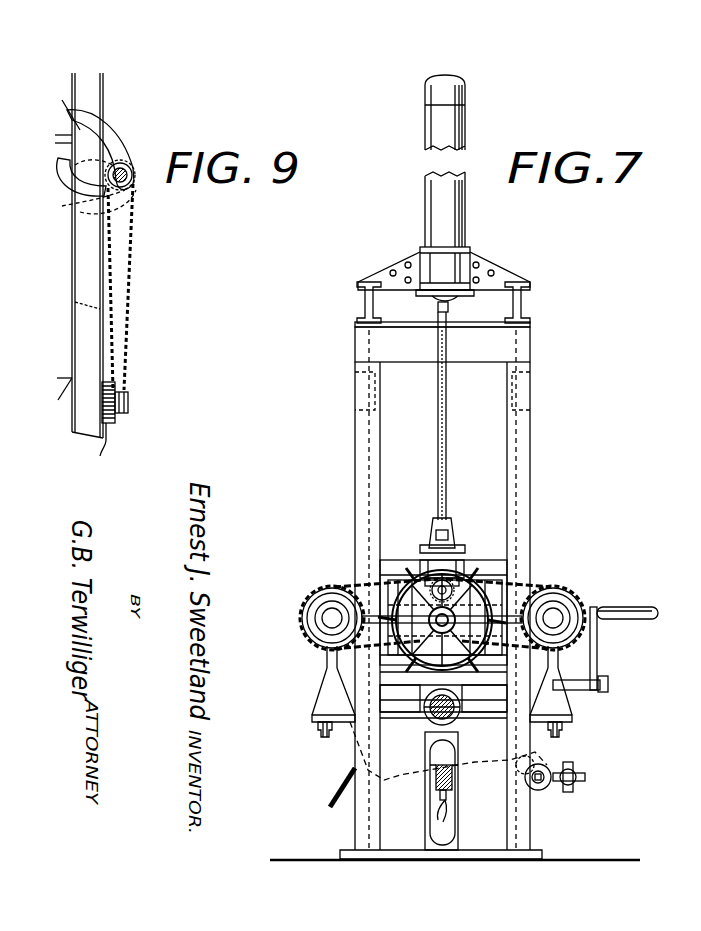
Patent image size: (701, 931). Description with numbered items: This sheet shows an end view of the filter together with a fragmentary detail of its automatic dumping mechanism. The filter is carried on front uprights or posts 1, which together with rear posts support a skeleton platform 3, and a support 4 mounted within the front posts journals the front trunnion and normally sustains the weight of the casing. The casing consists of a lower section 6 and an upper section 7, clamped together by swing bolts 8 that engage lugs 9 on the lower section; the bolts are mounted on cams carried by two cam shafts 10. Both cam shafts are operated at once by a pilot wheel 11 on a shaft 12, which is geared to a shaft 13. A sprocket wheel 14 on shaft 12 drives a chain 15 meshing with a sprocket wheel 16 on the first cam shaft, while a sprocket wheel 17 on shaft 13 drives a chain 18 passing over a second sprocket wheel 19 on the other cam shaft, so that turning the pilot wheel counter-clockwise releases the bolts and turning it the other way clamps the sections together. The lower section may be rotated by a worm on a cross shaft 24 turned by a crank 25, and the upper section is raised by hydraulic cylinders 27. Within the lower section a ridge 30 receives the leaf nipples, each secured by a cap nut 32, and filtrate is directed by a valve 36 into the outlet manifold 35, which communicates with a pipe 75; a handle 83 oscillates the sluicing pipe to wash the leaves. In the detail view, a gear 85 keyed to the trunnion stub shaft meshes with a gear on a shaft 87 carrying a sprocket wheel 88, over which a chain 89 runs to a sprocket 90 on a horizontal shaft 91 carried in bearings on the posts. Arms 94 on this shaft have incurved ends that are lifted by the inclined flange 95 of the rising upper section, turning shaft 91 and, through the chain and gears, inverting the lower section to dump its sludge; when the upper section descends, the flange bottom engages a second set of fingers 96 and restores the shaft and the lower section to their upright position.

In FIG. 7, the front uprights or posts 1 is at (360, 815).
In FIG. 7, the skeleton platform 3 is at (362, 302).
In FIG. 7, the support 4 is at (466, 718).
In FIG. 7, the lower section 6 is at (340, 693).
In FIG. 7, the upper section 7 is at (486, 583).
In FIG. 7, the swing bolts 8 is at (330, 662).
In FIG. 7, the lugs 9 is at (320, 716).
In FIG. 7, the cam shafts 10 is at (332, 618).
In FIG. 7, the pilot wheel 11 is at (388, 578).
In FIG. 7, the shaft 12 is at (410, 648).
In FIG. 7, the shaft 13 is at (452, 584).
In FIG. 7, the sprocket wheel 14 is at (428, 706).
In FIG. 7, the chain 15 is at (534, 593).
In FIG. 7, the sprocket wheel 16 is at (566, 599).
In FIG. 7, the sprocket wheel 17 is at (462, 586).
In FIG. 7, the chain 18 is at (346, 584).
In FIG. 7, the sprocket wheel 19 is at (316, 592).
In FIG. 7, the cross shaft 24 is at (594, 690).
In FIG. 7, the crank 25 is at (645, 619).
In FIG. 7, the hydraulic cylinders 27 is at (455, 222).
In FIG. 7, the ridge 30 is at (438, 778).
In FIG. 7, the cap nut 32 is at (444, 806).
In FIG. 7, the outlet manifold 35 is at (549, 772).
In FIG. 7, the valve 36 is at (586, 776).
In FIG. 7, the pipe 75 is at (530, 762).
In FIG. 7, the handle 83 is at (343, 790).
In FIG. 9, the gear 85 is at (107, 448).
In FIG. 9, the shaft 87 is at (128, 397).
In FIG. 9, the sprocket wheel 88 is at (127, 411).
In FIG. 9, the chain 89 is at (128, 306).
In FIG. 9, the sprocket 90 is at (134, 182).
In FIG. 9, the horizontal shaft 91 is at (128, 164).
In FIG. 9, the arms 94 is at (108, 137).
In FIG. 9, the inclined flange 95 is at (68, 115).
In FIG. 9, the second set of fingers 96 is at (86, 210).